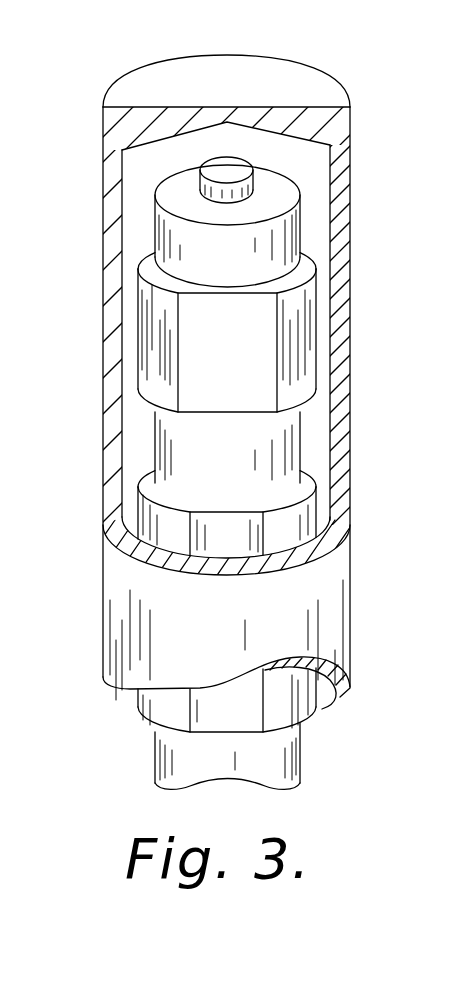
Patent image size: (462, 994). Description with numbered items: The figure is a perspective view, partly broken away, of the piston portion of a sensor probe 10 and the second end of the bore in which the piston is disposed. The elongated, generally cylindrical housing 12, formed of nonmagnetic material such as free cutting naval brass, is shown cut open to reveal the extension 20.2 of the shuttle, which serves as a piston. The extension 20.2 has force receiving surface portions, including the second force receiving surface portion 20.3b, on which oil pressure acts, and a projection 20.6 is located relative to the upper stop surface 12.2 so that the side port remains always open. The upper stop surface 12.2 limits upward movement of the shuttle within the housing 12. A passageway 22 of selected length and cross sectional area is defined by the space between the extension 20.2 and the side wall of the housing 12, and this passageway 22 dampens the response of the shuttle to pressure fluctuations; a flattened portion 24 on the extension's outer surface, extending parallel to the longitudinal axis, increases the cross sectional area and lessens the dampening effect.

The sensor probe 10 is at (248, 422).
The housing 12 is at (103, 310).
The upper stop surface 12.2 is at (312, 146).
The projection 20.6 is at (198, 171).
The second force receiving surface portion 20.3b is at (236, 170).
The extension 20.2 is at (152, 340).
The flat face 24 is at (190, 378).
The passageway 22 is at (235, 698).